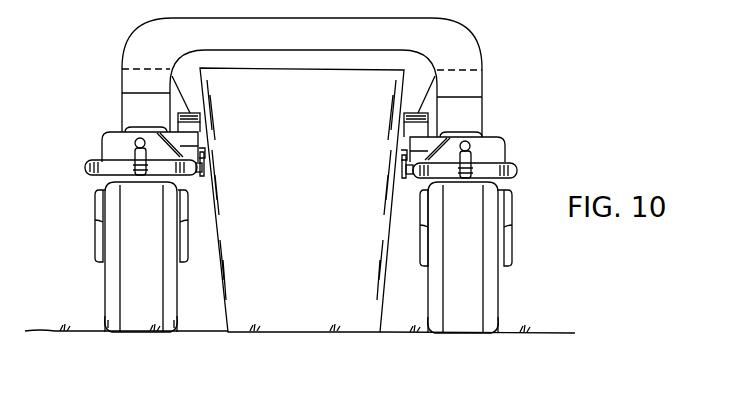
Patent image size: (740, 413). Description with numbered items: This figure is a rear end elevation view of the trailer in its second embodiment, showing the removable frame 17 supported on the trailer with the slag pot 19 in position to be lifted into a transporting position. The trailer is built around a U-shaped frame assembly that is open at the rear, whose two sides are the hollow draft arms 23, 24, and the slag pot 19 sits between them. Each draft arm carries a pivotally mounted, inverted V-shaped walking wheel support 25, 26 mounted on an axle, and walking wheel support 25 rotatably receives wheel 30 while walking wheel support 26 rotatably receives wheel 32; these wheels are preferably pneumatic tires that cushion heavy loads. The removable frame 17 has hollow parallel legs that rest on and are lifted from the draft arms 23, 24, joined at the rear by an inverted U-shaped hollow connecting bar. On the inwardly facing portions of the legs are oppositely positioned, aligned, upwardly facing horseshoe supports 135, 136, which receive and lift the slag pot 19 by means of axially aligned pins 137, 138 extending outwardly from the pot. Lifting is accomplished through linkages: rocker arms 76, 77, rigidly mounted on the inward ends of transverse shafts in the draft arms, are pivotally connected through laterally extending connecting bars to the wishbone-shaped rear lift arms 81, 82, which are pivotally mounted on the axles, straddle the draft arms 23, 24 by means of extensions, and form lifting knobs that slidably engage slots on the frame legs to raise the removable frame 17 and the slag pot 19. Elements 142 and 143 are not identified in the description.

The removable frame 17 is at (468, 36).
The left frame block 142 is at (126, 128).
The right frame block 143 is at (448, 130).
The pin 137 is at (200, 118).
The pin 138 is at (403, 118).
The horseshoe support 135 is at (195, 139).
The horseshoe support 136 is at (410, 140).
The slag pot 19 is at (296, 334).
The draft arm 23 is at (103, 136).
The draft arm 24 is at (506, 141).
The rear lift arm 81 is at (85, 167).
The rear lift arm 82 is at (517, 173).
The rocker arm 76 is at (202, 168).
The rocker arm 77 is at (404, 168).
The walking wheel support 25 is at (96, 212).
The walking wheel support 26 is at (512, 242).
The wheel 30 is at (137, 333).
The wheel 32 is at (462, 334).